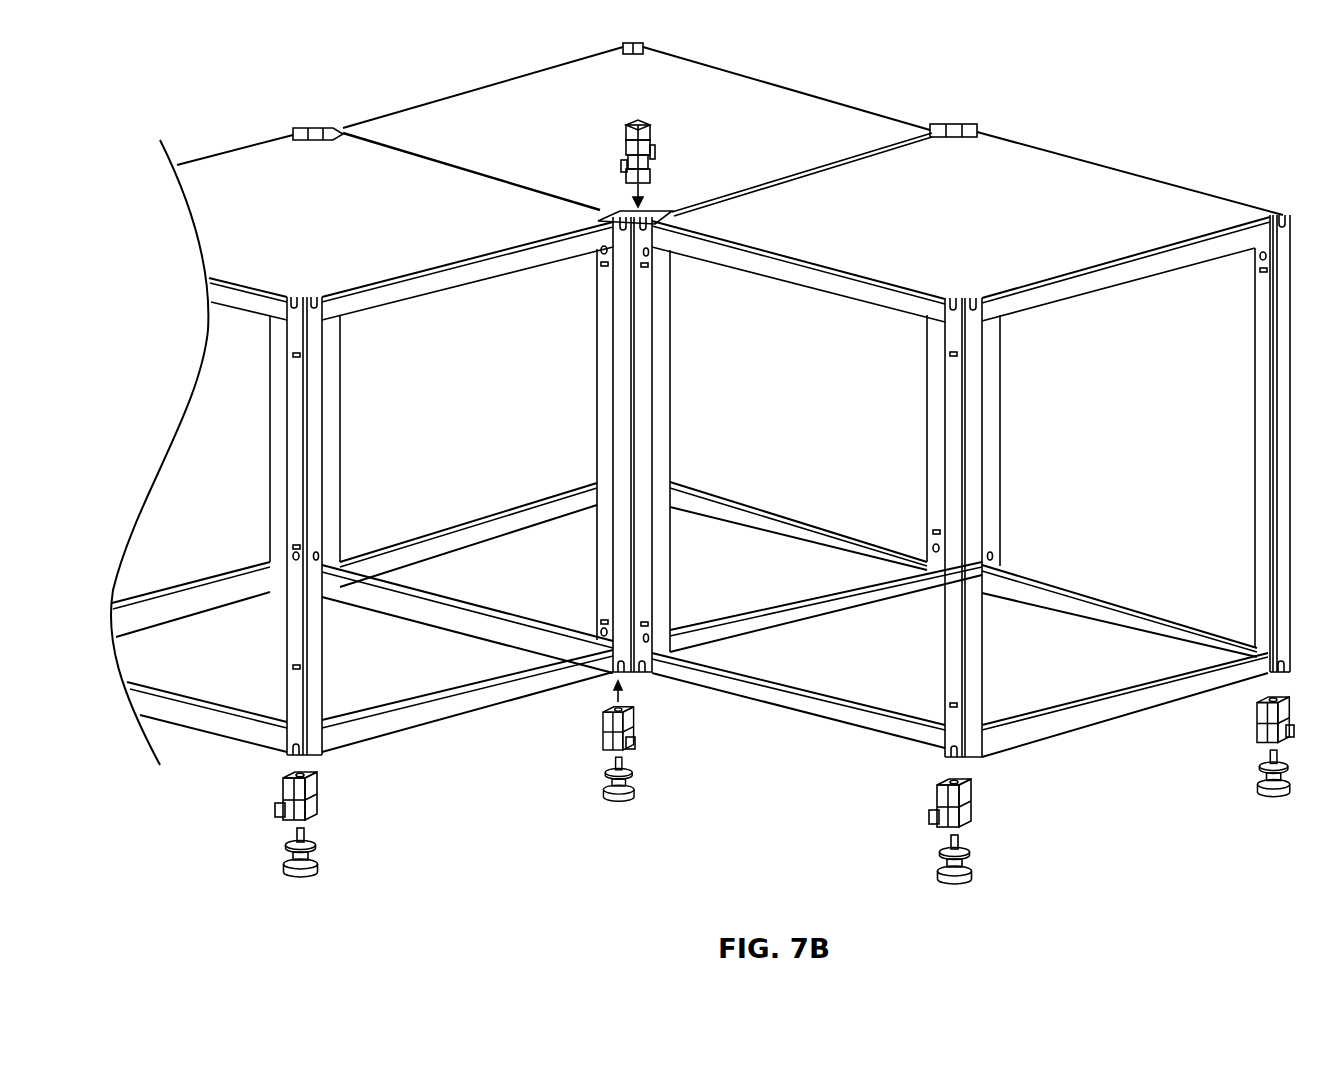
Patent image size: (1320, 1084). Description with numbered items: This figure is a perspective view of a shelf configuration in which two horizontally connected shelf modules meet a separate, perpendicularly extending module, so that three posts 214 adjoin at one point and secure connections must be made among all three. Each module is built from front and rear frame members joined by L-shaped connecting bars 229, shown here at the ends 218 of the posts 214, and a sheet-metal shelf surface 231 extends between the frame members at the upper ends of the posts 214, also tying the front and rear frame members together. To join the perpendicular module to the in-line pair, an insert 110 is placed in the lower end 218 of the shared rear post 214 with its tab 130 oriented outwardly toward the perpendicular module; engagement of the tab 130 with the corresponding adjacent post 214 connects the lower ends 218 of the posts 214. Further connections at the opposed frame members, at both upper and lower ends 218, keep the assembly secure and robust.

The insert 110 is at (313, 790).
The tab 130 is at (627, 748).
The post 214 is at (603, 383).
The end 218 is at (290, 752).
The connecting bar 229 is at (385, 603).
The shelf surface 231 is at (705, 109).